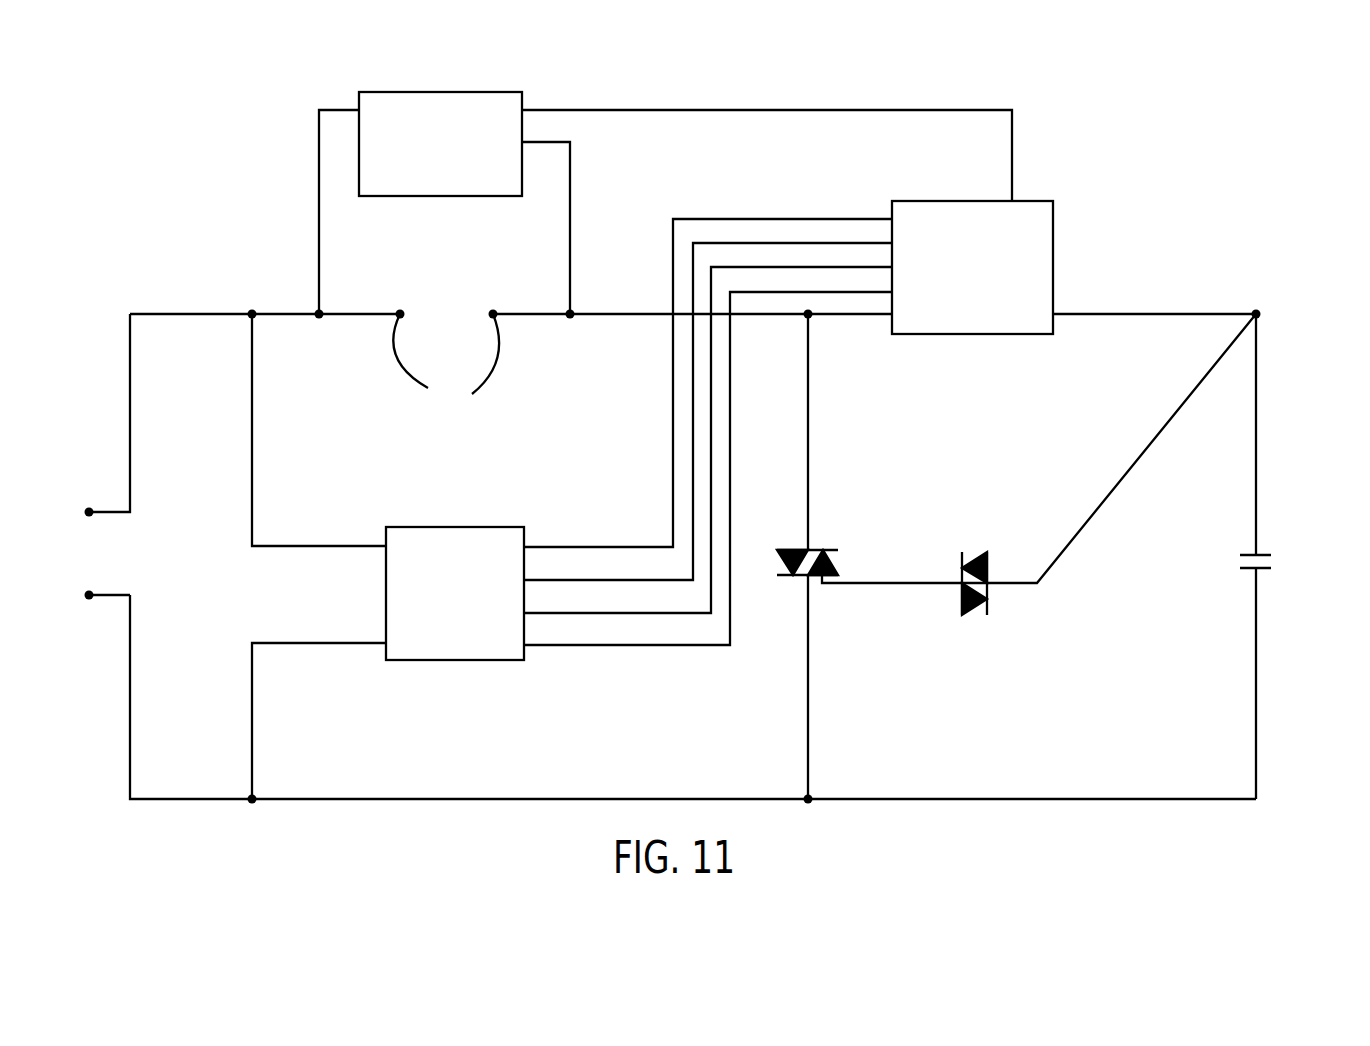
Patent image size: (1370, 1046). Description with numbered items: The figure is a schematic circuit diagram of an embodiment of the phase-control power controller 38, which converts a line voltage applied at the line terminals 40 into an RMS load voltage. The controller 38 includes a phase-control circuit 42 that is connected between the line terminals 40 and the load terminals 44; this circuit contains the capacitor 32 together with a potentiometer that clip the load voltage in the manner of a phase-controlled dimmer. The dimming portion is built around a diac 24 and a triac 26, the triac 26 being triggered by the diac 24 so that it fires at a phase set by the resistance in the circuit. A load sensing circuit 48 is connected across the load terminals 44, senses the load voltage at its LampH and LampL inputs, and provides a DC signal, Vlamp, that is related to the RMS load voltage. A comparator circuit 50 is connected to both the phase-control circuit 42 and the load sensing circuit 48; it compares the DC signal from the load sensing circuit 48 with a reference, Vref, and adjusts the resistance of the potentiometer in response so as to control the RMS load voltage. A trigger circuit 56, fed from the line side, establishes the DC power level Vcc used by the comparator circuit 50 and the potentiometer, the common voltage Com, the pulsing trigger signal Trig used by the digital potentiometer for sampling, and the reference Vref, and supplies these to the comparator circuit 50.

The phase-control power controller 38 is at (1152, 240).
The load sensing circuit 48 is at (497, 92).
The comparator circuit 50 is at (948, 201).
The trigger circuit 56 is at (440, 660).
The load terminals 44 is at (446, 360).
The line terminals 40 is at (89, 512).
The triac 26 is at (822, 550).
The diac 24 is at (975, 603).
The capacitor 32 is at (1263, 553).
The phase-control circuit 42 is at (1256, 700).